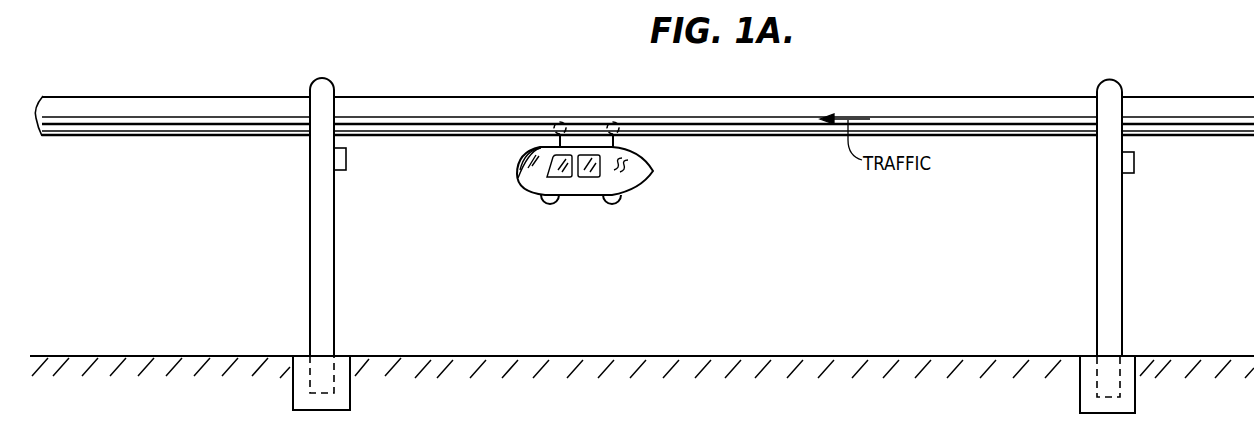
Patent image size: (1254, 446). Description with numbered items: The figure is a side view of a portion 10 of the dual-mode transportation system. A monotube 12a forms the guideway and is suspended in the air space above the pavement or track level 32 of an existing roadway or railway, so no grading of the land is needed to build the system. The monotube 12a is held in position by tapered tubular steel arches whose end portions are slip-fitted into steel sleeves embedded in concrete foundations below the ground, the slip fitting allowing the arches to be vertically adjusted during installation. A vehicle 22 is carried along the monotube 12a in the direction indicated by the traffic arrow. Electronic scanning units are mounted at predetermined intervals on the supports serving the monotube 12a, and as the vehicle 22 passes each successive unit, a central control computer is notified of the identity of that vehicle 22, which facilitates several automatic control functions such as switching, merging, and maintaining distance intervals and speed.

The portion of the dual-mode transportation system 10 is at (195, 80).
The monotube 12a is at (764, 97).
The vehicle 22 is at (638, 178).
The pavement or track level 32 is at (637, 355).